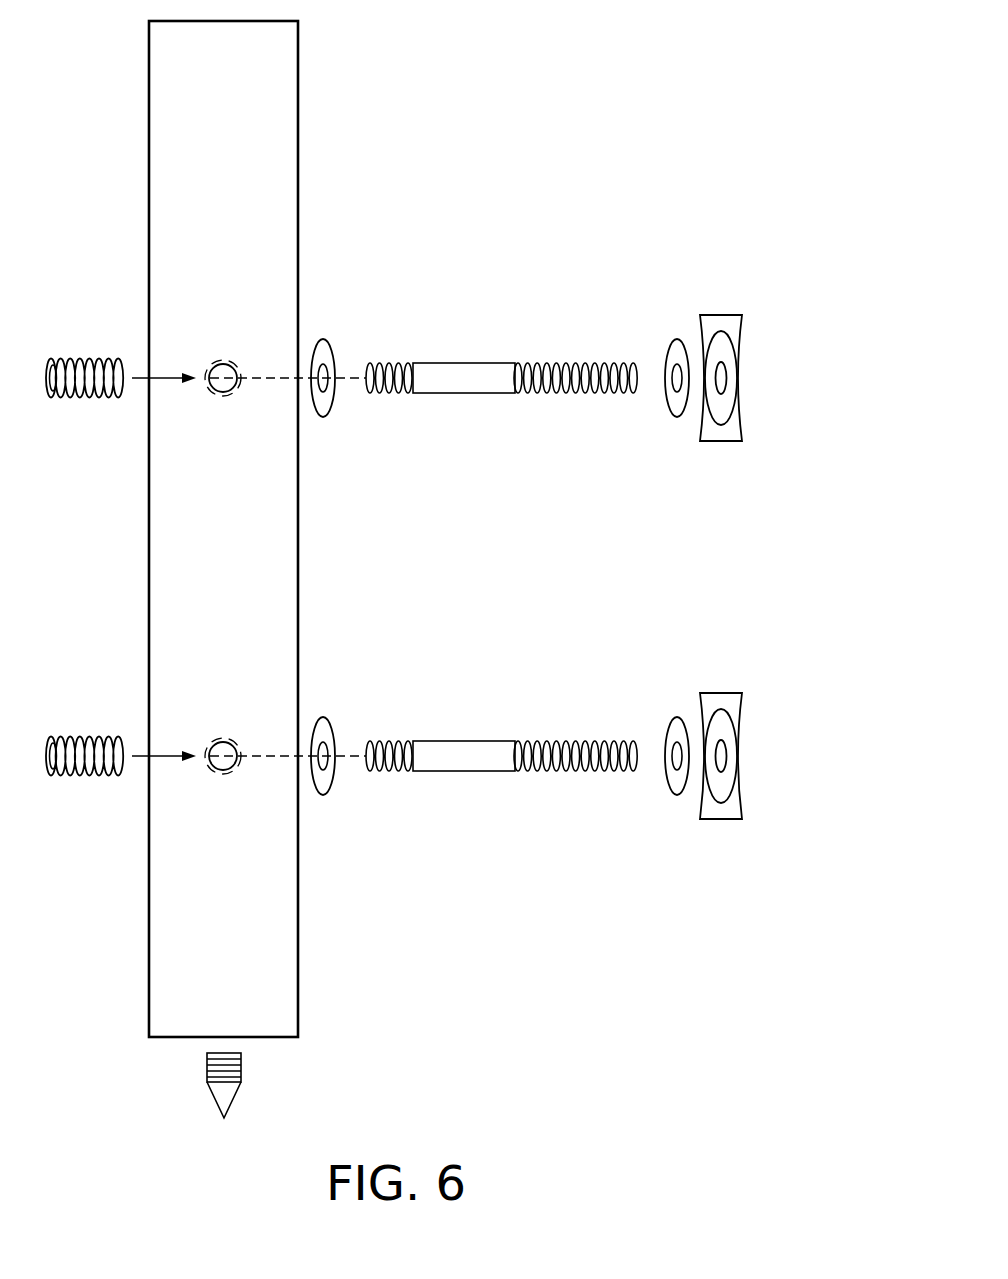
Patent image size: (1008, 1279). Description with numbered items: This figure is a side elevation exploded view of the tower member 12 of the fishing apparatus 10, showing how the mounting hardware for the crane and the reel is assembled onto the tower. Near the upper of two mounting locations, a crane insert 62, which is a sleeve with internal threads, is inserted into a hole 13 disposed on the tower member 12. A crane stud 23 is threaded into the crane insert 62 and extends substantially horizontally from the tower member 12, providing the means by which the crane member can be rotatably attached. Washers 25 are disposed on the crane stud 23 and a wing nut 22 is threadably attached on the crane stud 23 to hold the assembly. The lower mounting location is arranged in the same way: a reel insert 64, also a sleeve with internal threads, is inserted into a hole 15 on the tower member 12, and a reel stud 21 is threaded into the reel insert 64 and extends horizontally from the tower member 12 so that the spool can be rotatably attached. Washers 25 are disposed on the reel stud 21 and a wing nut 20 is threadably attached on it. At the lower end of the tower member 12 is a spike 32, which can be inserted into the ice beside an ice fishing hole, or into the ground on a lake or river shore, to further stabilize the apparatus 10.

The apparatus 10 is at (658, 116).
The tower member 12 is at (265, 103).
The hole 13 is at (228, 363).
The hole 15 is at (228, 741).
The wing nut 20 is at (758, 741).
The reel stud 21 is at (460, 742).
The wing nut 22 is at (758, 363).
The crane stud 23 is at (460, 363).
The washers 25 is at (332, 413).
The spike 32 is at (237, 1093).
The crane insert 62 is at (93, 358).
The reel insert 64 is at (93, 736).